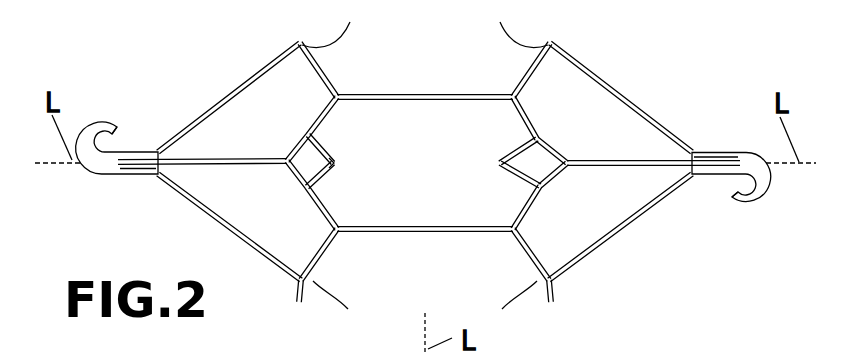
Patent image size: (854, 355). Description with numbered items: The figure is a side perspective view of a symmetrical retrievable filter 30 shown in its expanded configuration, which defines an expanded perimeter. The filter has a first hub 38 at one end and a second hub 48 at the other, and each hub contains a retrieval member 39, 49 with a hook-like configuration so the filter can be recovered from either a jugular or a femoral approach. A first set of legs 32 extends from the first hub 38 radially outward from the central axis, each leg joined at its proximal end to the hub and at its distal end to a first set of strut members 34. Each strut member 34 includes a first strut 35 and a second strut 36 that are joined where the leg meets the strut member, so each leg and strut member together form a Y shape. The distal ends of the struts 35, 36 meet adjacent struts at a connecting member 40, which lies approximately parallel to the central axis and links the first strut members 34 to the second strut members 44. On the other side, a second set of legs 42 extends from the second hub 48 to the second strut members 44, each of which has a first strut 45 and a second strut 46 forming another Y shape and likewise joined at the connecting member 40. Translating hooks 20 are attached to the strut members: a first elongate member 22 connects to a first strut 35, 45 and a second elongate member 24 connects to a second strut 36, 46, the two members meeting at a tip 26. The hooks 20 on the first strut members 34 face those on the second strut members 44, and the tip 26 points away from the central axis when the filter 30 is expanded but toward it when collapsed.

The translating hook 20 is at (504, 149).
The first elongate member 22 is at (328, 154).
The second elongate member 24 is at (327, 183).
The tip 26 is at (334, 163).
The symmetrical retrievable filter 30 is at (640, 67).
The first set of legs 32 is at (193, 219).
The first set of strut members 34 is at (299, 302).
The first strut 35 is at (309, 212).
The second strut 36 is at (313, 130).
The first hub 38 is at (96, 182).
The retrieval member 39 is at (103, 121).
The connecting member 40 is at (416, 85).
The second set of legs 42 is at (652, 221).
The second set of strut members 44 is at (551, 302).
The first strut 45 is at (541, 207).
The second strut 46 is at (540, 125).
The second hub 48 is at (740, 142).
The retrieval member 49 is at (752, 205).